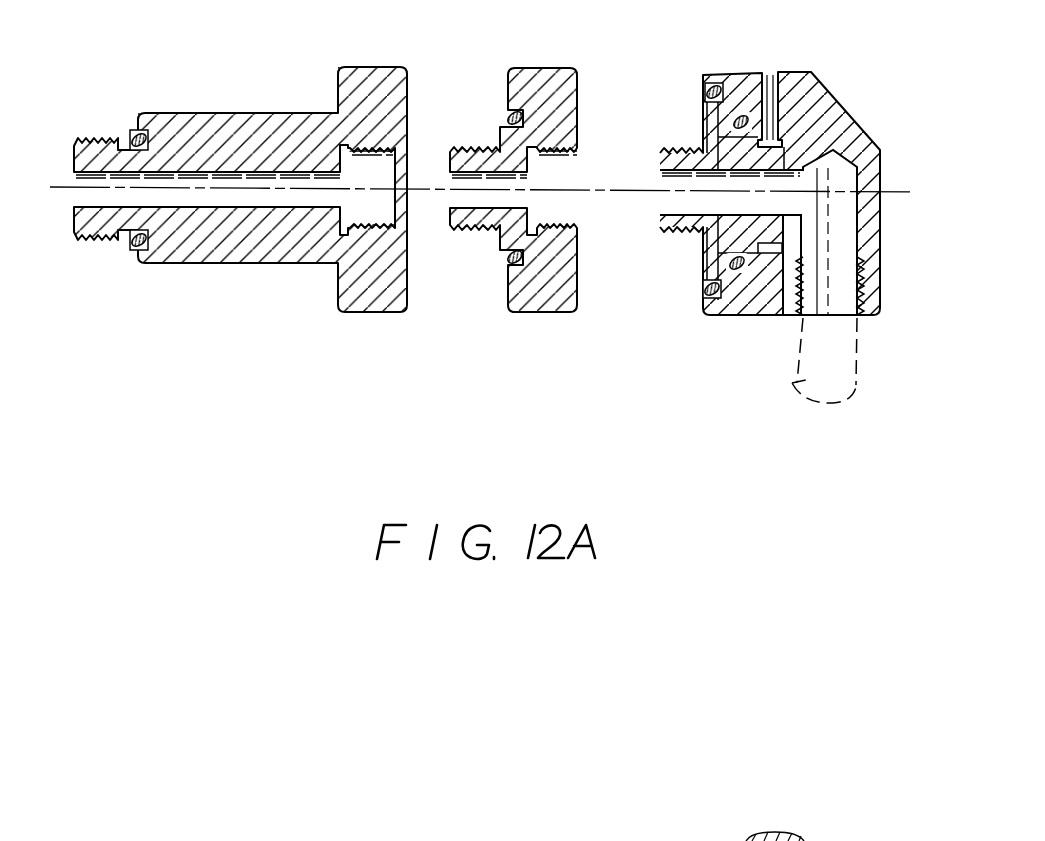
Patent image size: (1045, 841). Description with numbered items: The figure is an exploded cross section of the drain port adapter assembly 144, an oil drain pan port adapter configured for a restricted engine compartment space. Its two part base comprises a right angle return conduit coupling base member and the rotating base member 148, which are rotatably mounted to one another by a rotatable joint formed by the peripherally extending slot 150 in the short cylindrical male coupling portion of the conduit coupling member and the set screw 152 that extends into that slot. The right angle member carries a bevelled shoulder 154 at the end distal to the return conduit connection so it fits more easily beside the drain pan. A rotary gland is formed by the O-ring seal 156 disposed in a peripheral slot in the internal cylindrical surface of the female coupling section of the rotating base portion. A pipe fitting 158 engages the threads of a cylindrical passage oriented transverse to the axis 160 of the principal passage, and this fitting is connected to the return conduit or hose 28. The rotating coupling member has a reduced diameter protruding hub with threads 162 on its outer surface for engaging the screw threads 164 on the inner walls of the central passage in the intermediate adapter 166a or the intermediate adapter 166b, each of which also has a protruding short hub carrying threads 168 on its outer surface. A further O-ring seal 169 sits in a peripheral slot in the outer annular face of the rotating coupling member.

The drain port adapter assembly 144 is at (918, 422).
The rotating base member 148 is at (693, 308).
The peripherally extending slot 150 is at (780, 152).
The set screw 152 is at (773, 72).
The bevelled shoulder 154 is at (828, 97).
The O-ring seal 156 is at (745, 113).
The pipe fitting 158 is at (850, 276).
The axis 160 is at (578, 190).
The threads 162 is at (676, 238).
The screw threads 164 is at (576, 218).
The intermediate adapter 166a is at (540, 313).
The intermediate adapter 166b is at (367, 313).
The threads 168 is at (476, 150).
The O-ring seal 169 is at (703, 95).
The return conduit or hose 28 is at (858, 334).